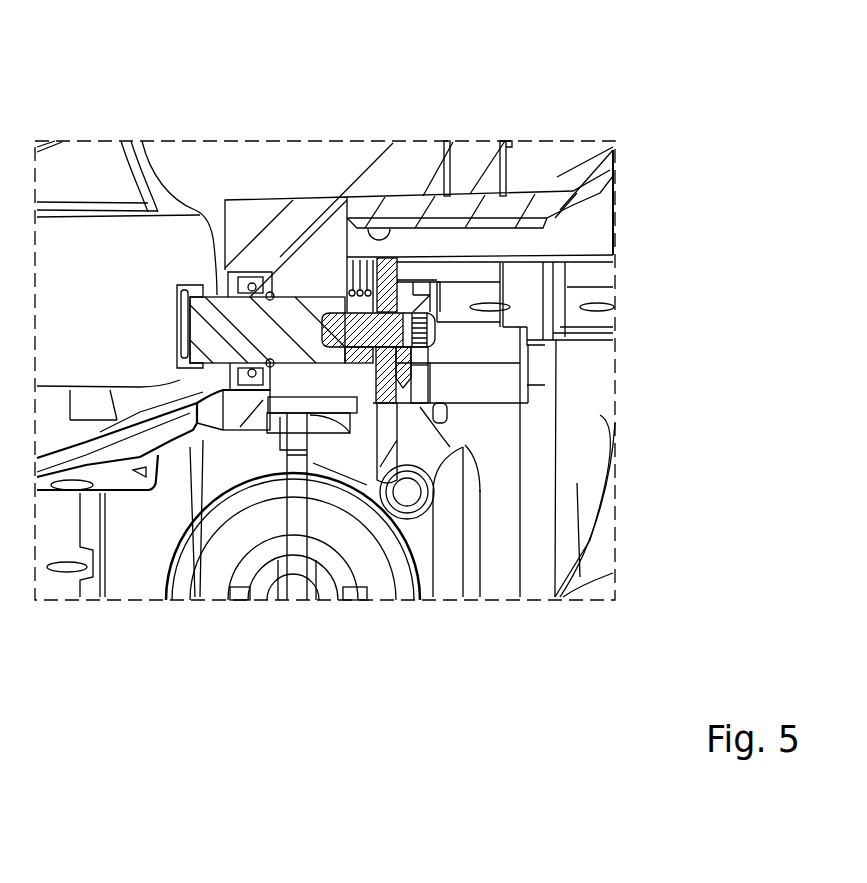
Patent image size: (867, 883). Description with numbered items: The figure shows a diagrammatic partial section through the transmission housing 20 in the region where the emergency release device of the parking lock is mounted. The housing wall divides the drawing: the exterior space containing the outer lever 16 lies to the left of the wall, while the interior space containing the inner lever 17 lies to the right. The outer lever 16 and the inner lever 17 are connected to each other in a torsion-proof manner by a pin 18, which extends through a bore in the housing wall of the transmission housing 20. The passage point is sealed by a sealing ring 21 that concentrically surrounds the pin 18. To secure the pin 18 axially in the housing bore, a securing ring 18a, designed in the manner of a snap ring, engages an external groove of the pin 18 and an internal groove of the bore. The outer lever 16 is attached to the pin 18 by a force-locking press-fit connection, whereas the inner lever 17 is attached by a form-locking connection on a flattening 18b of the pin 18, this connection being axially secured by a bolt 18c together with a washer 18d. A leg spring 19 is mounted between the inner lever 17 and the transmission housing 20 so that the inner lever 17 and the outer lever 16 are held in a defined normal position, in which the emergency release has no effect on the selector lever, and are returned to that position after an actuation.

The outer lever 16 is at (177, 308).
The sealing ring 21 is at (248, 282).
The securing ring 18a is at (272, 272).
The pin 18 is at (297, 333).
The leg spring 19 is at (365, 218).
The transmission housing 20 is at (352, 257).
The inner lever 17 is at (392, 262).
The bolt 18c is at (428, 355).
The washer 18d is at (428, 378).
The flattening 18b is at (400, 417).